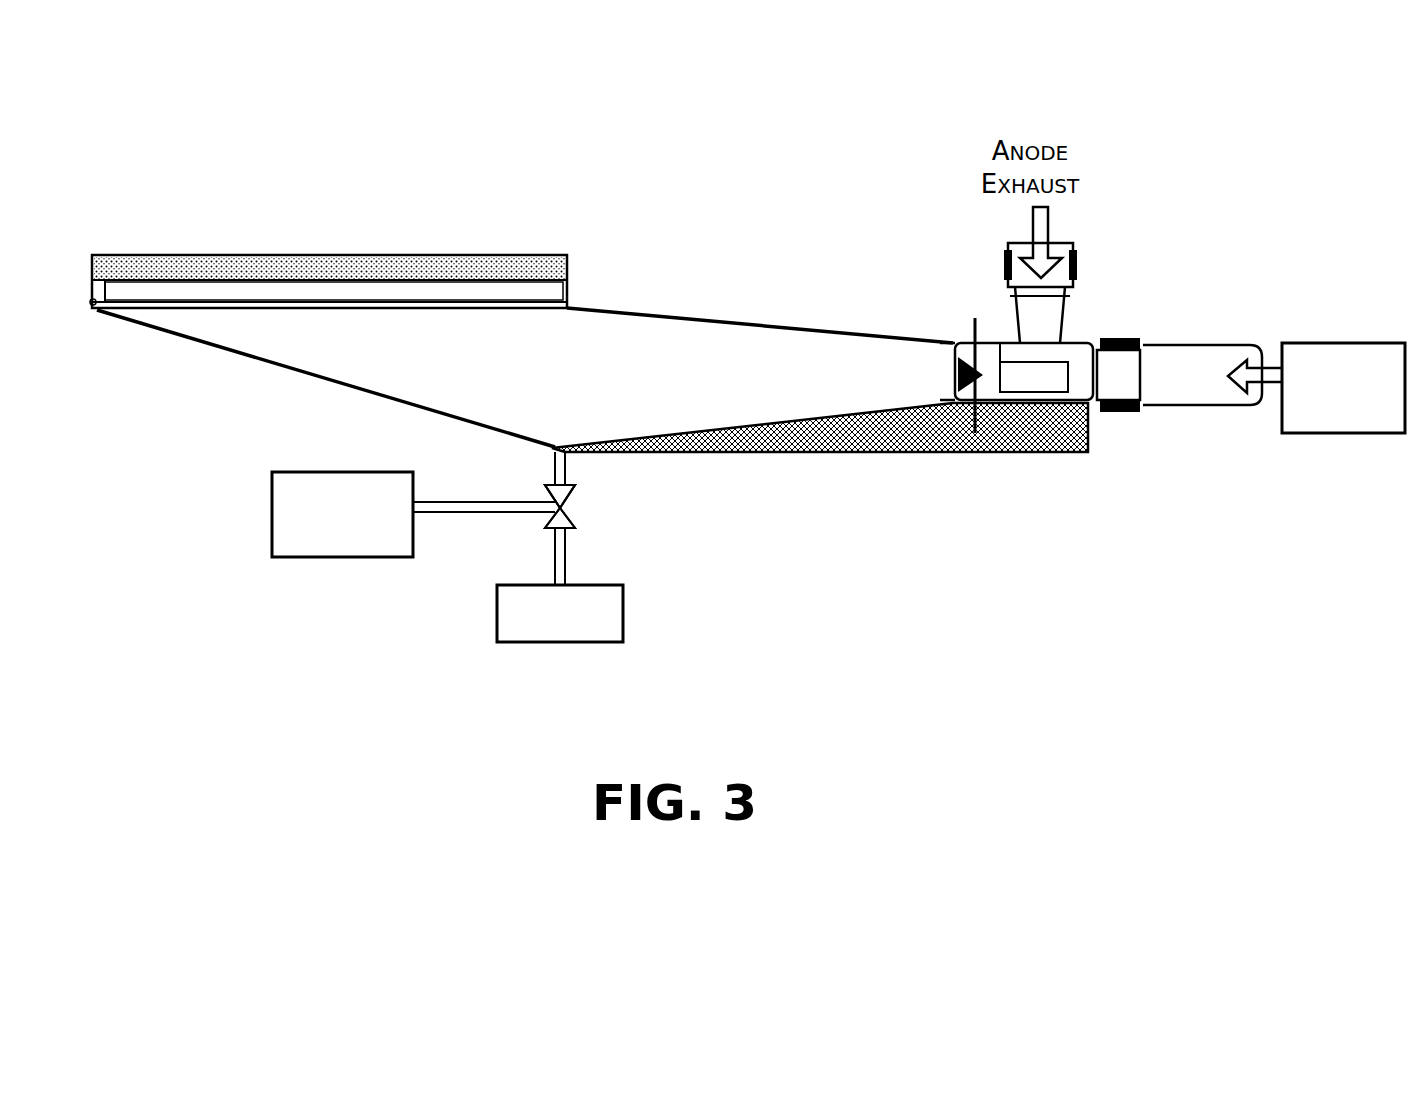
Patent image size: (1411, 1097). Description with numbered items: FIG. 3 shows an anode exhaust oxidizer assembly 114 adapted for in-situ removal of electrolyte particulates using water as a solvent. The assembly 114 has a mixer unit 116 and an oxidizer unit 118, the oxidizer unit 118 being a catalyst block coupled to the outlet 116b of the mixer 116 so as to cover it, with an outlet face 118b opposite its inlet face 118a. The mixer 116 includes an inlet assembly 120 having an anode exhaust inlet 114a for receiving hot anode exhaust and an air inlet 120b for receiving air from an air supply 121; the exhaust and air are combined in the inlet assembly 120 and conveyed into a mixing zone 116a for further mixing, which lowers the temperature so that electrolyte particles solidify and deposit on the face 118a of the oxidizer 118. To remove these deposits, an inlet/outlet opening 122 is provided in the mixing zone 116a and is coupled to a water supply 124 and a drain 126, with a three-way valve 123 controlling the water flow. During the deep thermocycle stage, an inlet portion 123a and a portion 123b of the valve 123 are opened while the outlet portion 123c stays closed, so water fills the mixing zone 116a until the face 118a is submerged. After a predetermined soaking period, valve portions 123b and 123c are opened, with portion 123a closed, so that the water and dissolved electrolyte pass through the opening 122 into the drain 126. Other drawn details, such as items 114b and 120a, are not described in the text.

The anode exhaust oxidizer assembly 114 is at (826, 219).
The anode exhaust inlet 114a is at (1048, 247).
The housing top panel 114b is at (497, 257).
The mixer unit 116 is at (805, 460).
The mixing zone 116a is at (765, 347).
The outlet of the mixer unit 116b is at (537, 312).
The oxidizer unit 118 is at (212, 290).
The face of the oxidizer unit 118a is at (158, 303).
The outlet face of the oxidizer unit 118b is at (345, 278).
The inlet assembly 120 is at (1058, 353).
The valve 120a is at (1037, 315).
The air inlet 120b is at (1117, 378).
The air supply 121 is at (1305, 355).
The inlet/outlet opening 122 is at (566, 458).
The valve 123 is at (567, 513).
The inlet portion of the valve 123a is at (555, 503).
The portion of the valve 123b is at (563, 488).
The outlet portion of the valve 123c is at (558, 525).
The water supply 124 is at (282, 510).
The drain 126 is at (613, 627).